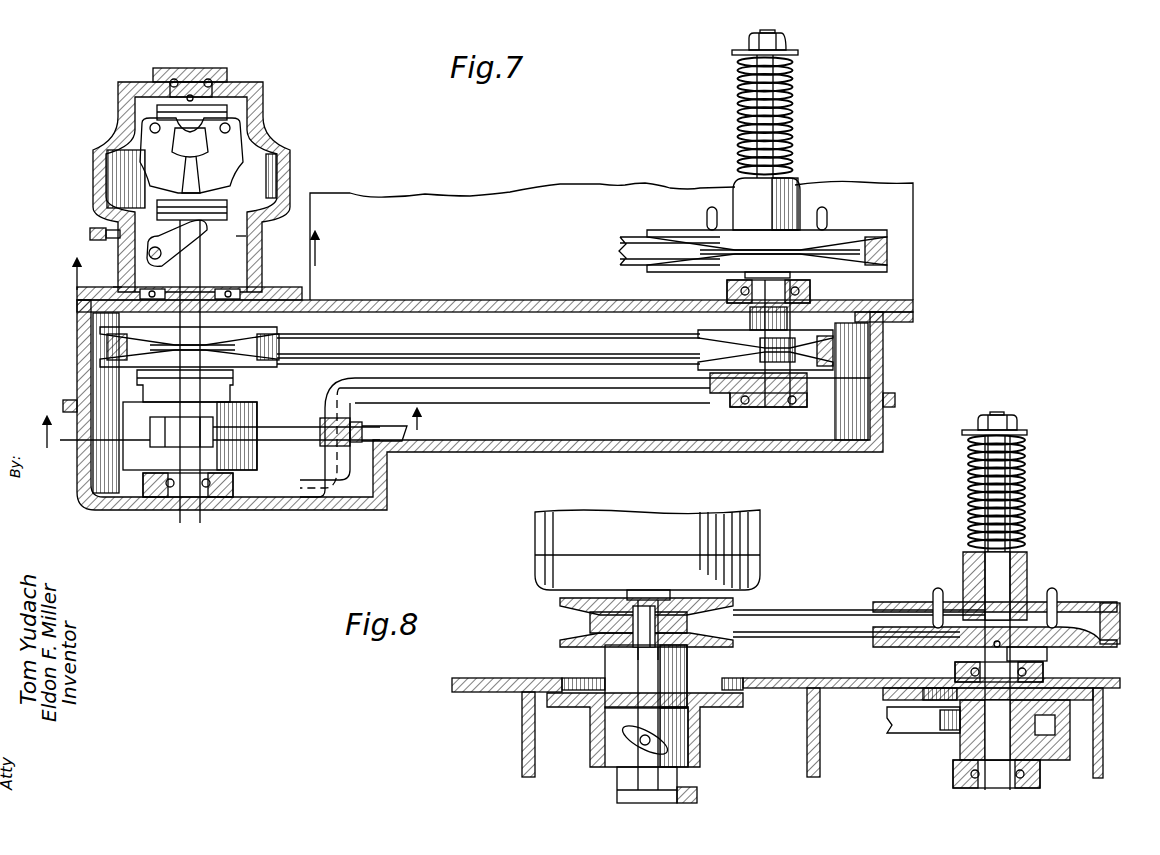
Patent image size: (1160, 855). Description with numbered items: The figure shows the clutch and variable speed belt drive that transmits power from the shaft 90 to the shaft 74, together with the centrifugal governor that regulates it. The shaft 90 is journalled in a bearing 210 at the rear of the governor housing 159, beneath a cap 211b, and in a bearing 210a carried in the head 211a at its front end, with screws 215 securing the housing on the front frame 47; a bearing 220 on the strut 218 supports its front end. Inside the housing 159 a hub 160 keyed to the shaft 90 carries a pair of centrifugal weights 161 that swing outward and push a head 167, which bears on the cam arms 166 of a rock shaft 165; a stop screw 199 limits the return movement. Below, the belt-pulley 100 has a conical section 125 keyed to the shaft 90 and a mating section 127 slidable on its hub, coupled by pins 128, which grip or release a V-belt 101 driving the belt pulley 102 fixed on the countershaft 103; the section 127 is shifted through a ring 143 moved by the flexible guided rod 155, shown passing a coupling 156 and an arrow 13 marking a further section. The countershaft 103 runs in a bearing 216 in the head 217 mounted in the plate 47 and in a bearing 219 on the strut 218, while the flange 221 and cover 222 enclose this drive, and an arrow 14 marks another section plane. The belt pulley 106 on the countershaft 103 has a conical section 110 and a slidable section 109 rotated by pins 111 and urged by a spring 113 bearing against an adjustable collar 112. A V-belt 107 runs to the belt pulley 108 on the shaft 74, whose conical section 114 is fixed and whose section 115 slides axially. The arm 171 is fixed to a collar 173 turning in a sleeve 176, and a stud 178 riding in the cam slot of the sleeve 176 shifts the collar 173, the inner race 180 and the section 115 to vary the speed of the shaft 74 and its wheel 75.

In FIG. 7, the section line 13 is at (249, 440).
In FIG. 7, the section line 14 is at (48, 275).
In FIG. 7, the front frame 47 is at (480, 300).
In FIG. 8, the front frame 47 is at (800, 680).
In FIG. 8, the shaft 74 is at (640, 598).
In FIG. 8, the wheel 75 is at (762, 528).
In FIG. 7, the shaft 90 is at (201, 275).
In FIG. 7, the belt-pulley 100 is at (262, 372).
In FIG. 7, the V-belt 101 is at (835, 336).
In FIG. 8, the V-belt 101 is at (902, 720).
In FIG. 7, the belt pulley 102 is at (812, 380).
In FIG. 8, the belt pulley 102 is at (950, 745).
In FIG. 7, the countershaft 103 is at (750, 297).
In FIG. 8, the countershaft 103 is at (993, 572).
In FIG. 7, the belt pulley 106 is at (888, 236).
In FIG. 8, the belt pulley 106 is at (1100, 598).
In FIG. 7, the V-belt 107 is at (508, 335).
In FIG. 8, the V-belt 107 is at (590, 622).
In FIG. 8, the belt pulley 108 is at (733, 650).
In FIG. 8, the pulley section 109 is at (898, 595).
In FIG. 8, the conical section 110 is at (1070, 652).
In FIG. 8, the pins 111 is at (1052, 590).
In FIG. 7, the adjustable collar 112 is at (790, 52).
In FIG. 8, the adjustable collar 112 is at (1028, 433).
In FIG. 7, the spring 113 is at (792, 100).
In FIG. 8, the spring 113 is at (1025, 482).
In FIG. 8, the conical section 114 is at (560, 601).
In FIG. 8, the pulley section 115 is at (560, 645).
In FIG. 7, the conical section 125 is at (100, 330).
In FIG. 7, the mating section 127 is at (95, 378).
In FIG. 7, the pins 128 is at (118, 287).
In FIG. 7, the ring 143 is at (132, 452).
In FIG. 7, the flexible guided rod 155 is at (278, 442).
In FIG. 7, the coupling 156 is at (395, 447).
In FIG. 7, the housing 159 is at (244, 160).
In FIG. 7, the hub 160 is at (228, 112).
In FIG. 7, the centrifugal weights 161 is at (232, 172).
In FIG. 7, the rock shaft 165 is at (196, 255).
In FIG. 7, the cam arms 166 is at (252, 240).
In FIG. 7, the head 167 is at (213, 222).
In FIG. 8, the arm 171 is at (698, 790).
In FIG. 8, the collar 173 is at (617, 777).
In FIG. 8, the sleeve 176 is at (702, 725).
In FIG. 8, the stud 178 is at (665, 736).
In FIG. 8, the inner race 180 is at (652, 676).
In FIG. 7, the stop screw 199 is at (90, 234).
In FIG. 7, the bearing 210 is at (182, 80).
In FIG. 7, the bearing 210a is at (252, 296).
In FIG. 7, the head 211a is at (298, 300).
In FIG. 7, the cap 211b is at (222, 70).
In FIG. 7, the screws 215 is at (75, 293).
In FIG. 7, the bearing 216 is at (812, 292).
In FIG. 8, the bearing 216 is at (1045, 670).
In FIG. 7, the head 217 is at (882, 306).
In FIG. 8, the head 217 is at (940, 690).
In FIG. 7, the strut 218 is at (578, 400).
In FIG. 7, the bearing 219 is at (792, 410).
In FIG. 8, the bearing 219 is at (1041, 778).
In FIG. 7, the bearing 220 is at (210, 505).
In FIG. 7, the flange 221 is at (77, 348).
In FIG. 8, the flange 221 is at (1103, 752).
In FIG. 7, the cover 222 is at (152, 508).